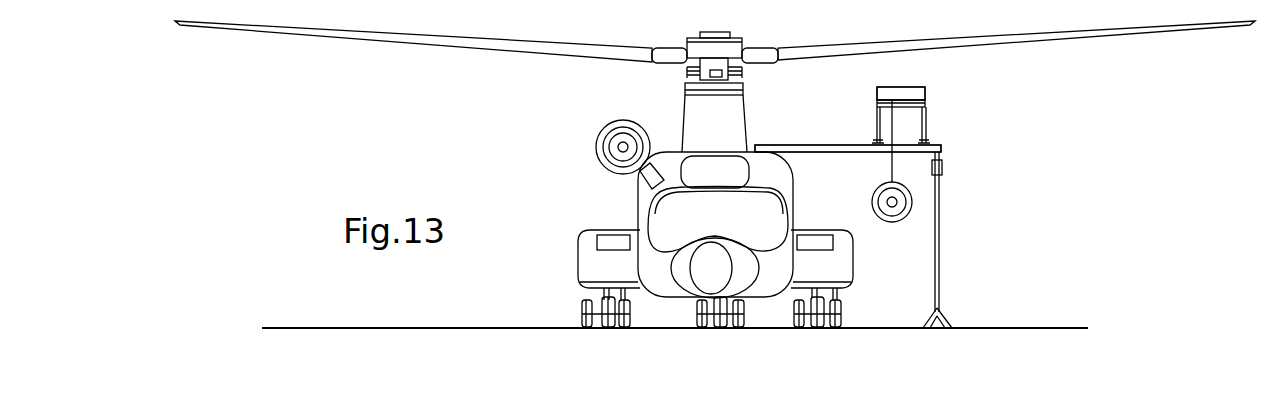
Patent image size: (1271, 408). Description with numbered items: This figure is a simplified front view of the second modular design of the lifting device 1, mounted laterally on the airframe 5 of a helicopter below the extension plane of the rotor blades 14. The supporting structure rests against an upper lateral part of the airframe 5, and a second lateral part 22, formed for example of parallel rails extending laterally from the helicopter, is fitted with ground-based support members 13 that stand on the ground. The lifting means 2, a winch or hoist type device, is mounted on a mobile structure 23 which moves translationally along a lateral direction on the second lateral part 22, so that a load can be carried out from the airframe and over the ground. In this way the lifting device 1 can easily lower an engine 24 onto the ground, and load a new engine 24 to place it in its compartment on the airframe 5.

The lifting device 1 is at (1004, 157).
The lifting means 2 is at (876, 92).
The airframe 5 is at (632, 197).
The ground-based support members 13 is at (941, 232).
The rotor blades 14 is at (373, 41).
The second lateral part 22 is at (820, 156).
The mobile structure 23 is at (932, 92).
The engine 24 is at (605, 116).